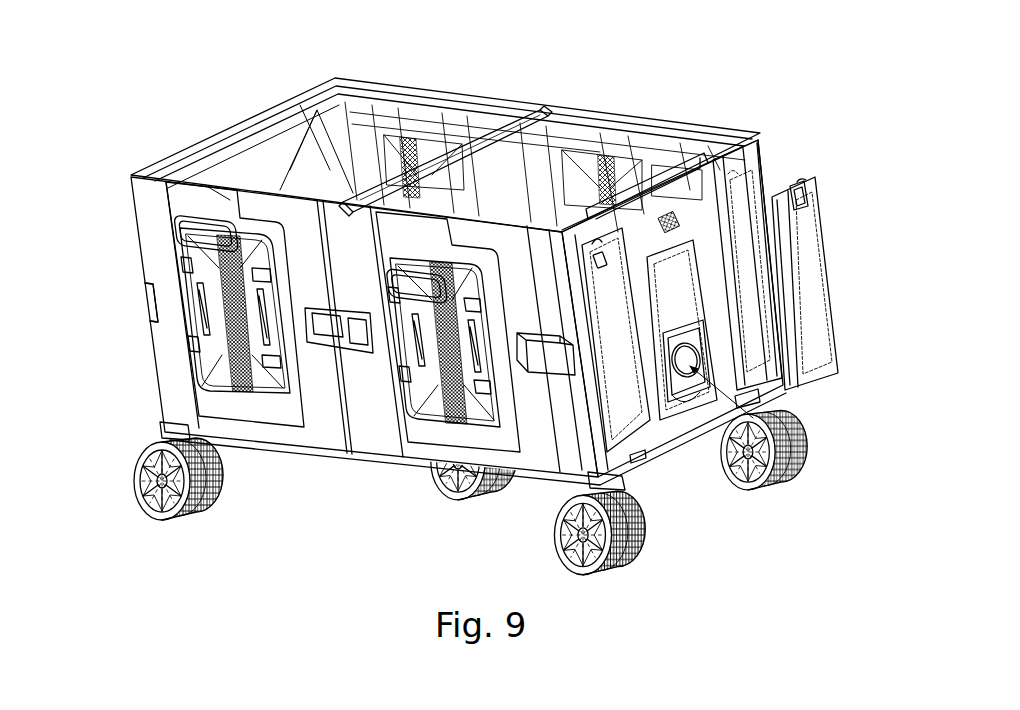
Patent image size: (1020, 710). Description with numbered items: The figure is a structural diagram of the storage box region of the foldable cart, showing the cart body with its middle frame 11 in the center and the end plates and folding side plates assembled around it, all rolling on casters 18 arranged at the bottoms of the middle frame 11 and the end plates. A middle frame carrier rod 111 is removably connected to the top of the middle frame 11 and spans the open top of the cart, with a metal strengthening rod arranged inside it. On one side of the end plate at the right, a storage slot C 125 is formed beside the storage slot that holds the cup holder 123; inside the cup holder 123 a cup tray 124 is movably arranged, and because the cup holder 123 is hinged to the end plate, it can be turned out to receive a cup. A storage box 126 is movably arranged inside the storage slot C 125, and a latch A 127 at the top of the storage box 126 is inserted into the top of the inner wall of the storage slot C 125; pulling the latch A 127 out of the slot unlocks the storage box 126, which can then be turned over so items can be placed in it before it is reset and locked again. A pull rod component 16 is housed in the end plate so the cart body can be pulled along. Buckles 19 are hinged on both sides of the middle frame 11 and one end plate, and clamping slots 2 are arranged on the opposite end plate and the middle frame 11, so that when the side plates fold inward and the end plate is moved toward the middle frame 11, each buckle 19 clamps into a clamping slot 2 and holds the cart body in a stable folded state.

The clamping slot 2 is at (364, 328).
The middle frame 11 is at (348, 259).
The pull rod component 16 is at (626, 325).
The caster 18 is at (141, 474).
The buckle 19 is at (240, 380).
The middle frame carrier rod 111 is at (498, 124).
The cup holder 123 is at (677, 398).
The cup tray 124 is at (812, 460).
The storage slot C 125 is at (742, 191).
The storage box 126 is at (802, 292).
The latch A 127 is at (806, 196).